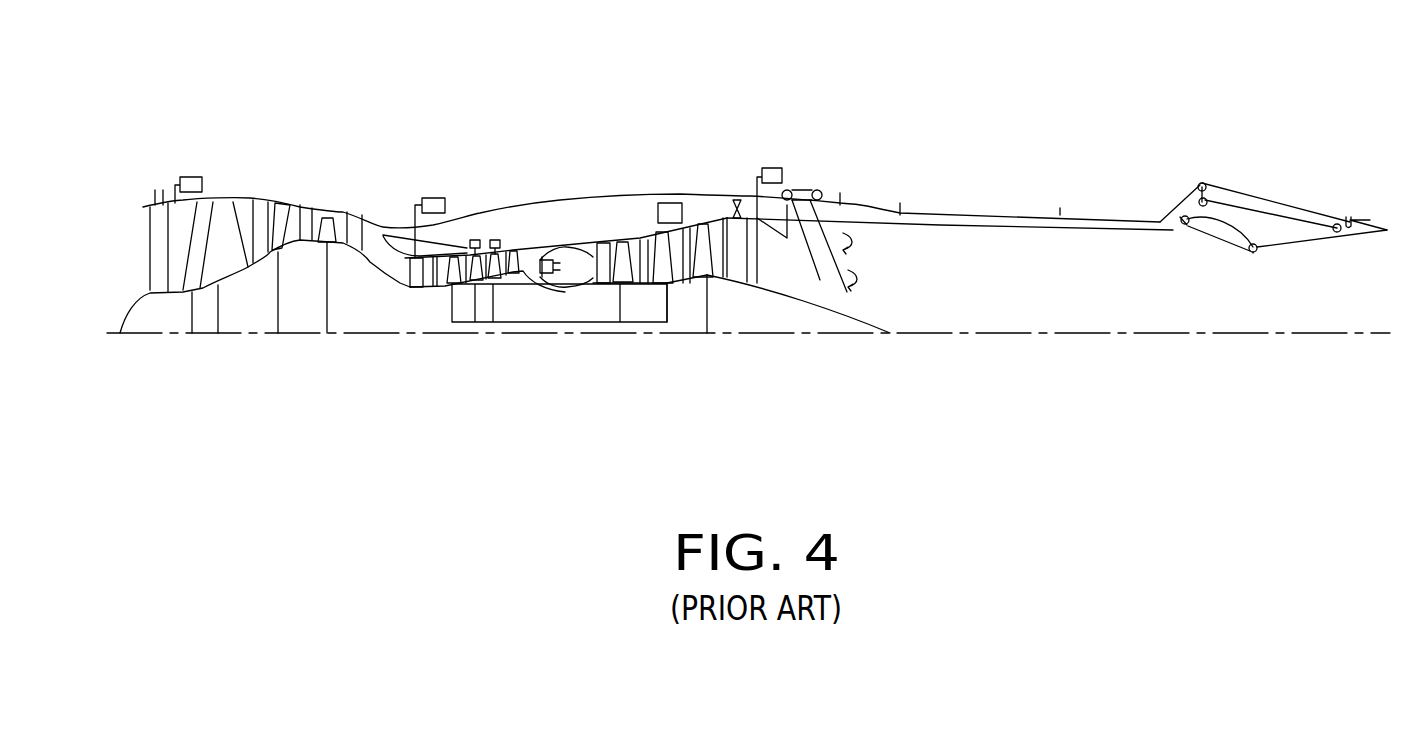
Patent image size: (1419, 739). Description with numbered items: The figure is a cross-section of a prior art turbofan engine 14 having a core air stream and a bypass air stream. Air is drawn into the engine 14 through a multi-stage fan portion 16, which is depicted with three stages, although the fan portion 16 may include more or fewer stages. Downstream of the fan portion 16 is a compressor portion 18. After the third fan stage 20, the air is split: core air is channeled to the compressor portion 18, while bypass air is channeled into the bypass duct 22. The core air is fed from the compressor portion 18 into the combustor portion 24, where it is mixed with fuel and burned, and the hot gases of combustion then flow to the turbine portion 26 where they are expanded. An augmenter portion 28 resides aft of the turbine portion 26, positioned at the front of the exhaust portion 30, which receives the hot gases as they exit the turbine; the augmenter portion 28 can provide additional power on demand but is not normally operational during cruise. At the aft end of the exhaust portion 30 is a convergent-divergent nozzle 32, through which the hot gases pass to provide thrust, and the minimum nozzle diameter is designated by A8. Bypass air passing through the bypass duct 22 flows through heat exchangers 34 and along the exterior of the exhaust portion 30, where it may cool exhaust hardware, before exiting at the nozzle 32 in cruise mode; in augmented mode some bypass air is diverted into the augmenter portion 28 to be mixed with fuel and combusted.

The engine 14 is at (918, 93).
The multi-stage fan portion 16 is at (260, 200).
The compressor portion 18 is at (465, 287).
The third fan stage 20 is at (332, 222).
The bypass duct 22 is at (548, 215).
The combustor portion 24 is at (563, 277).
The turbine portion 26 is at (673, 273).
The augmenter portion 28 is at (860, 278).
The exhaust portion 30 is at (913, 315).
The nozzle 32 is at (1217, 240).
The heat exchangers 34 is at (670, 203).
The minimum nozzle diameter A8 is at (1255, 252).